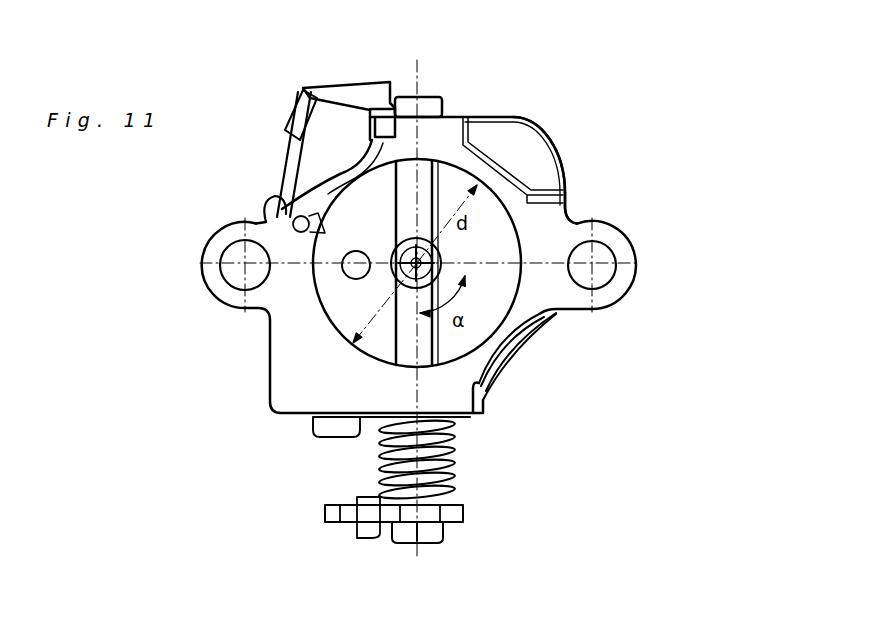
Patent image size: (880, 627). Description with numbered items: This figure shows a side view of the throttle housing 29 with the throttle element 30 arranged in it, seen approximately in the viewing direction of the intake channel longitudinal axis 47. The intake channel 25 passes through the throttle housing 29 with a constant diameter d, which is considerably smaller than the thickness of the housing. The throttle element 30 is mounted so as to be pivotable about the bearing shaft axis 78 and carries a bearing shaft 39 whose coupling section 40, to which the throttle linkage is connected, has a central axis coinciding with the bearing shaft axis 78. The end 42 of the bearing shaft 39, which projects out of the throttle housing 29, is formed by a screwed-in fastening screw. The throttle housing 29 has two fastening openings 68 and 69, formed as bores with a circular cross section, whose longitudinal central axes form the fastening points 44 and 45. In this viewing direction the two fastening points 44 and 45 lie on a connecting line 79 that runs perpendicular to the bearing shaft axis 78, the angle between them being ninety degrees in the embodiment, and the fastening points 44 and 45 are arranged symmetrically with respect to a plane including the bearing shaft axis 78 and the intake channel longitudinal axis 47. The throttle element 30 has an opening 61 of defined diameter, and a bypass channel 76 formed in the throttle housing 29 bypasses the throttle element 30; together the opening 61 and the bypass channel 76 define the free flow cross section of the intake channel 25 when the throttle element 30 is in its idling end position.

The bearing shaft axis 78 is at (418, 82).
The throttle housing 29 is at (540, 227).
The connecting line 79 is at (543, 265).
The fastening opening 69 is at (613, 262).
The fastening point 45 is at (593, 270).
The intake channel 25 is at (486, 312).
The throttle element 30 is at (530, 373).
The bearing shaft 39 is at (447, 372).
The end of the bearing shaft 42 is at (438, 543).
The coupling section 40 is at (392, 543).
The opening 61 is at (343, 280).
The fastening point 44 is at (235, 283).
The fastening opening 68 is at (223, 250).
The bypass channel 76 is at (263, 203).
The intake channel longitudinal axis 47 is at (395, 240).